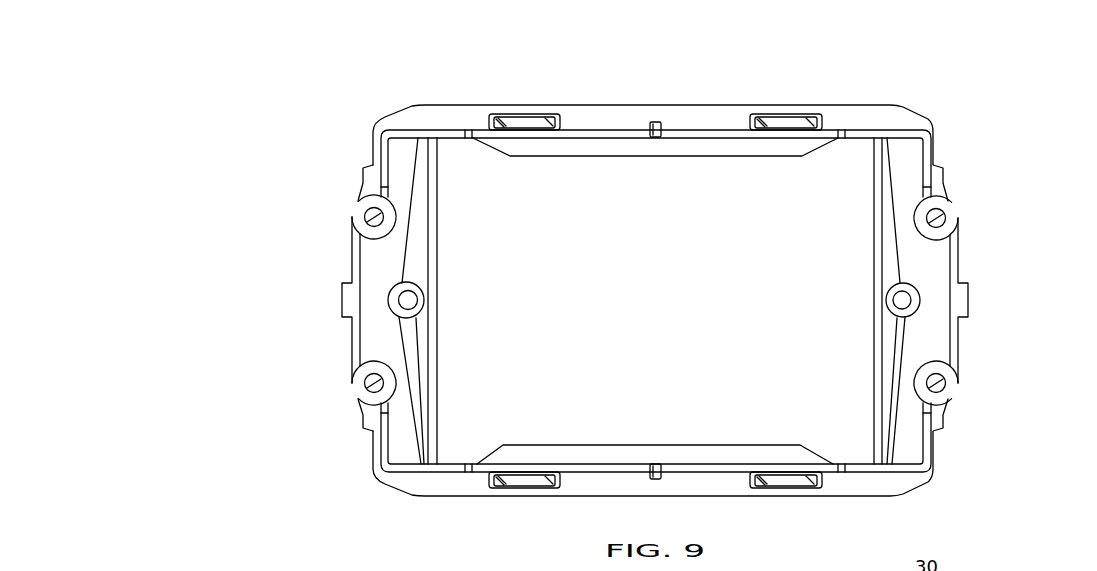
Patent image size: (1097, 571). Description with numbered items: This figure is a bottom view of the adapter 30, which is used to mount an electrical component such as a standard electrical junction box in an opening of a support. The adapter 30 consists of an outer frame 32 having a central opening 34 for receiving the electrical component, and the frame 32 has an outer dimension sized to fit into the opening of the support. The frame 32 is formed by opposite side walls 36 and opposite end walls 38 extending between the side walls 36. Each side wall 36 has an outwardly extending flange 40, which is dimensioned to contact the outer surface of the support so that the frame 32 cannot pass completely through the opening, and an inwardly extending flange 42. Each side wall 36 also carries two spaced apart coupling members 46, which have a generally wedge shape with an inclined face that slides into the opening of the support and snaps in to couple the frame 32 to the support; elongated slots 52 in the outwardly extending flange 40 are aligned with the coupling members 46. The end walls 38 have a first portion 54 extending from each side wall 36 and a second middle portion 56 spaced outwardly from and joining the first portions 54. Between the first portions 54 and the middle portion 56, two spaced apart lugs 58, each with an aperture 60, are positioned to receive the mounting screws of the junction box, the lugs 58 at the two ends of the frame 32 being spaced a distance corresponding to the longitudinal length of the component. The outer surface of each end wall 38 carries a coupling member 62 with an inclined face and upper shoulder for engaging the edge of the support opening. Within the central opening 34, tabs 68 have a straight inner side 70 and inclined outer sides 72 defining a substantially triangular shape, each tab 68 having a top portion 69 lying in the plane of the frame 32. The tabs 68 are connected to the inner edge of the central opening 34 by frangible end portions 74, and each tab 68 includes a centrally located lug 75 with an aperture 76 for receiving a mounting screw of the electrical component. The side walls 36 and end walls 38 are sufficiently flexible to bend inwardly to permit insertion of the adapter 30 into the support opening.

The adapter 30 is at (922, 99).
The outer frame 32 is at (942, 128).
The central opening 34 is at (637, 218).
The side walls 36 is at (705, 140).
The end walls 38 is at (968, 225).
The outwardly extending flange 40 is at (866, 116).
The inwardly extending flange 42 is at (558, 150).
The coupling members 46 is at (519, 106).
The elongated slots 52 is at (500, 126).
The first portion 54 is at (372, 158).
The second middle portion 56 is at (352, 262).
The lugs 58 is at (358, 197).
The aperture 60 is at (365, 216).
The coupling member 62 is at (330, 316).
The tabs 68 is at (452, 253).
The top portion 69 is at (900, 258).
The inner side 70 is at (440, 345).
The inclined outer sides 72 is at (400, 254).
The frangible end portions 74 is at (440, 138).
The lug 75 is at (350, 300).
The aperture 76 is at (418, 300).